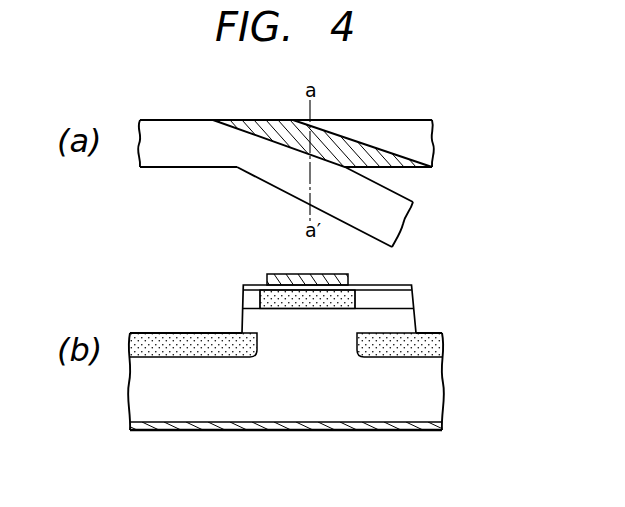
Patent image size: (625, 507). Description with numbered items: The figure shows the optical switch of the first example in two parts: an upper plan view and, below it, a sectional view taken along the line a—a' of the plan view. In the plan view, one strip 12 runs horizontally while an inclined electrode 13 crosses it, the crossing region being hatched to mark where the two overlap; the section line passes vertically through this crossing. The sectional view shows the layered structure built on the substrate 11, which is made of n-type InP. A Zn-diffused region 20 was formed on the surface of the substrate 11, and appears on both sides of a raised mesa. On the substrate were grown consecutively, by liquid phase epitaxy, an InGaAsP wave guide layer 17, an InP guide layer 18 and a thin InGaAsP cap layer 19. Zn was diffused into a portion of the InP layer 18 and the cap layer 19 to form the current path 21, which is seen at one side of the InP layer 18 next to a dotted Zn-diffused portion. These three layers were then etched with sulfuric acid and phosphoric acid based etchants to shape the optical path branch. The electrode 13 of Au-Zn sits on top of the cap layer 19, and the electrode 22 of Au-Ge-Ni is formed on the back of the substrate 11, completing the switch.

The substrate 11 is at (442, 385).
The source/drain electrode strip 12 is at (178, 120).
The electrode 13 is at (238, 120).
The InGaAsP wave guide layer 17 is at (417, 320).
The InP guide layer 18 is at (415, 298).
The InGaAsP cap layer 19 is at (393, 285).
The Zn-diffused region 20 is at (217, 358).
The current path 21 is at (260, 297).
The electrode 22 is at (347, 431).